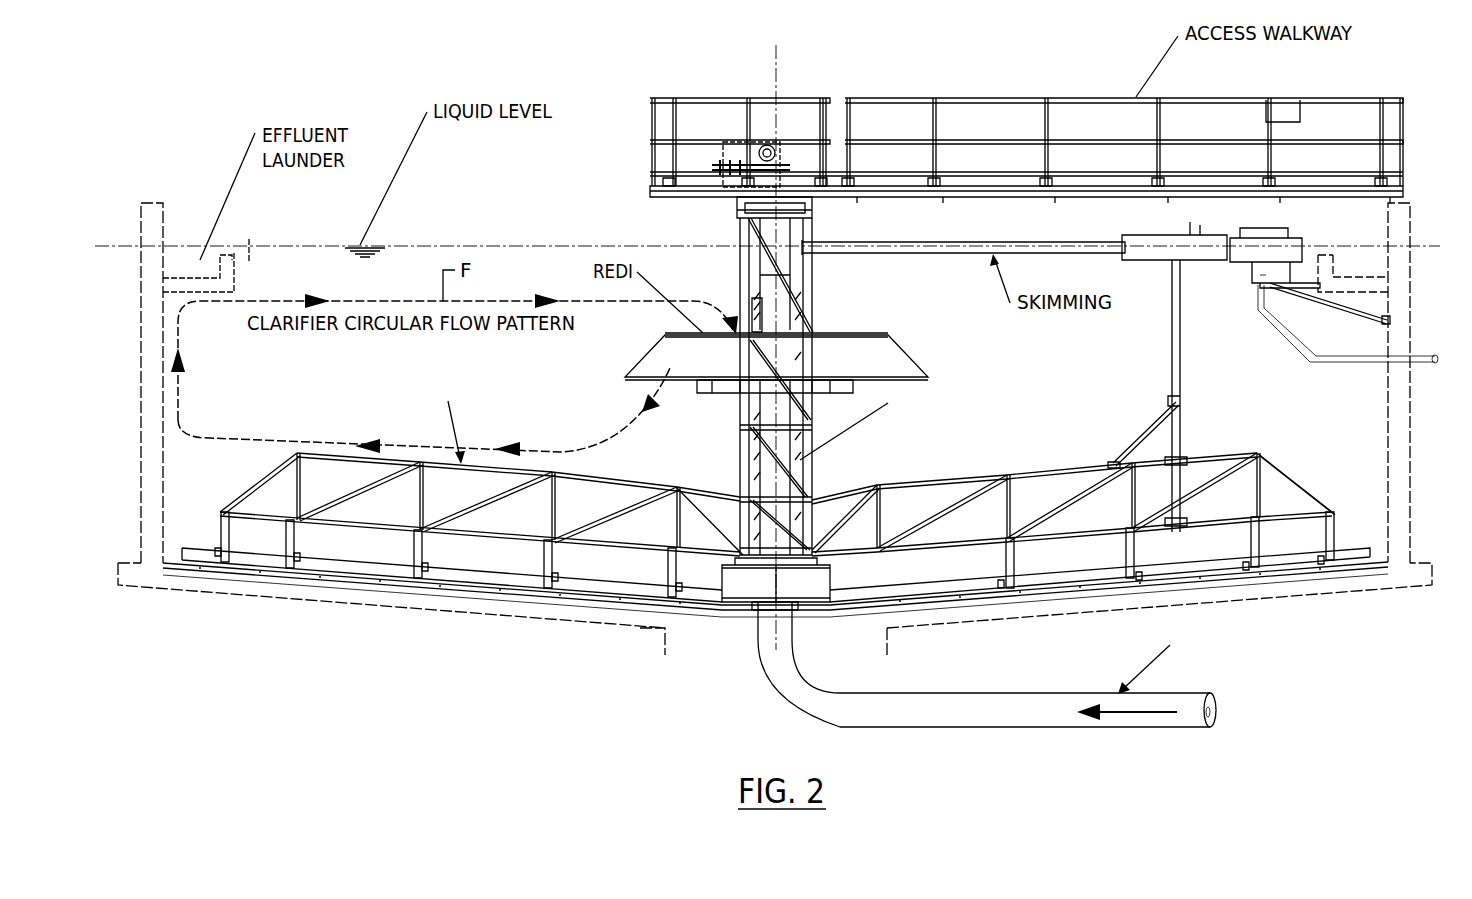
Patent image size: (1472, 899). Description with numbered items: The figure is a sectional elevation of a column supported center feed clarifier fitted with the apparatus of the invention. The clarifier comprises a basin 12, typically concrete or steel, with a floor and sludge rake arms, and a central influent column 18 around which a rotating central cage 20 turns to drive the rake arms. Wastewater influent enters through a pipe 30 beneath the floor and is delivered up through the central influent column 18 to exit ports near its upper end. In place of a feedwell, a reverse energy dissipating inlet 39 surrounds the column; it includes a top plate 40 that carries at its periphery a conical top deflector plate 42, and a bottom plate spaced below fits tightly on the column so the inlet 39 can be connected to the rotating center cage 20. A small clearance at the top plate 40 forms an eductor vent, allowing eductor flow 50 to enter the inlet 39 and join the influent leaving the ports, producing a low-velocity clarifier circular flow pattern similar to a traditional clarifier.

The basin 12 is at (1412, 500).
The central influent column 18 is at (793, 463).
The rotating central cage 20 is at (740, 458).
The pipe 30 is at (978, 727).
The reverse energy dissipating inlet 39 is at (868, 318).
The top plate 40 is at (833, 335).
The conical top deflector plate 42 is at (890, 357).
The eductor flow 50 is at (722, 305).